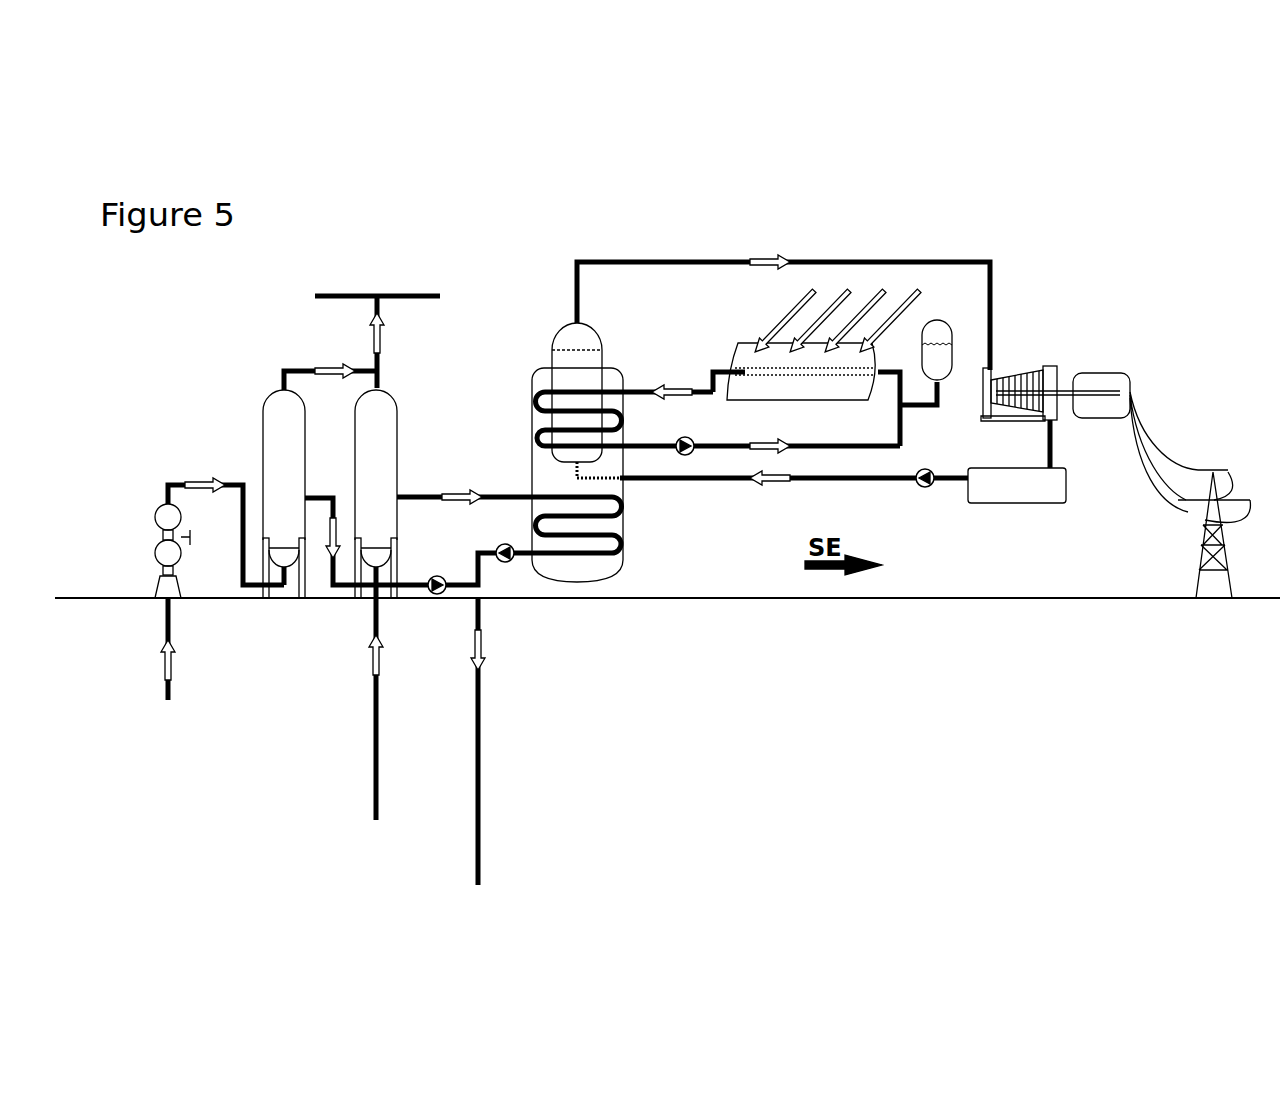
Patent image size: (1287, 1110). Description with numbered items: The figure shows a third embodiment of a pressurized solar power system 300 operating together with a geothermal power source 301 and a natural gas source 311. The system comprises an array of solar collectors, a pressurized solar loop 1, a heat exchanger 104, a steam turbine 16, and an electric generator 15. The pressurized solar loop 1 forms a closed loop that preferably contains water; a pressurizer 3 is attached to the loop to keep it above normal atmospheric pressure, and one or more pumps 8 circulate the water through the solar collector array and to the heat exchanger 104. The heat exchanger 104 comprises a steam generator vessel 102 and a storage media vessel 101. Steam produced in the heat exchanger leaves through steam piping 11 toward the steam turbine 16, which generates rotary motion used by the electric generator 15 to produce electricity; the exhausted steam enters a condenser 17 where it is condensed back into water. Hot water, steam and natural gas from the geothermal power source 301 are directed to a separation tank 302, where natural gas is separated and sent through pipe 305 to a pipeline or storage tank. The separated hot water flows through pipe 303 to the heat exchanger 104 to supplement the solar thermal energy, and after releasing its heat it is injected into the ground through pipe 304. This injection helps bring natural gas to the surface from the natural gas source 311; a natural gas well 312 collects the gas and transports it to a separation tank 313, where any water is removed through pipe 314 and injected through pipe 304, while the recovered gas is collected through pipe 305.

The pressurized solar power system 300 is at (838, 140).
The steam piping 11 is at (648, 262).
The steam generator vessel 102 is at (563, 322).
The heat exchanger 104 is at (611, 338).
The separation tank 313 is at (283, 410).
The separation tank 302 is at (390, 408).
The pipe 305 is at (384, 313).
The natural gas well 312 is at (163, 587).
The natural gas source 311 is at (158, 720).
The pipe 314 is at (338, 590).
The geothermal power source 301 is at (372, 836).
The pipe 304 is at (480, 620).
The pipe 303 is at (490, 495).
The storage media vessel 101 is at (615, 573).
The pump 8 is at (690, 455).
The pressurized solar loop 1 is at (853, 446).
The pressurizer 3 is at (952, 328).
The steam turbine 16 is at (1043, 370).
The electric generator 15 is at (1123, 378).
The condenser 17 is at (1057, 498).